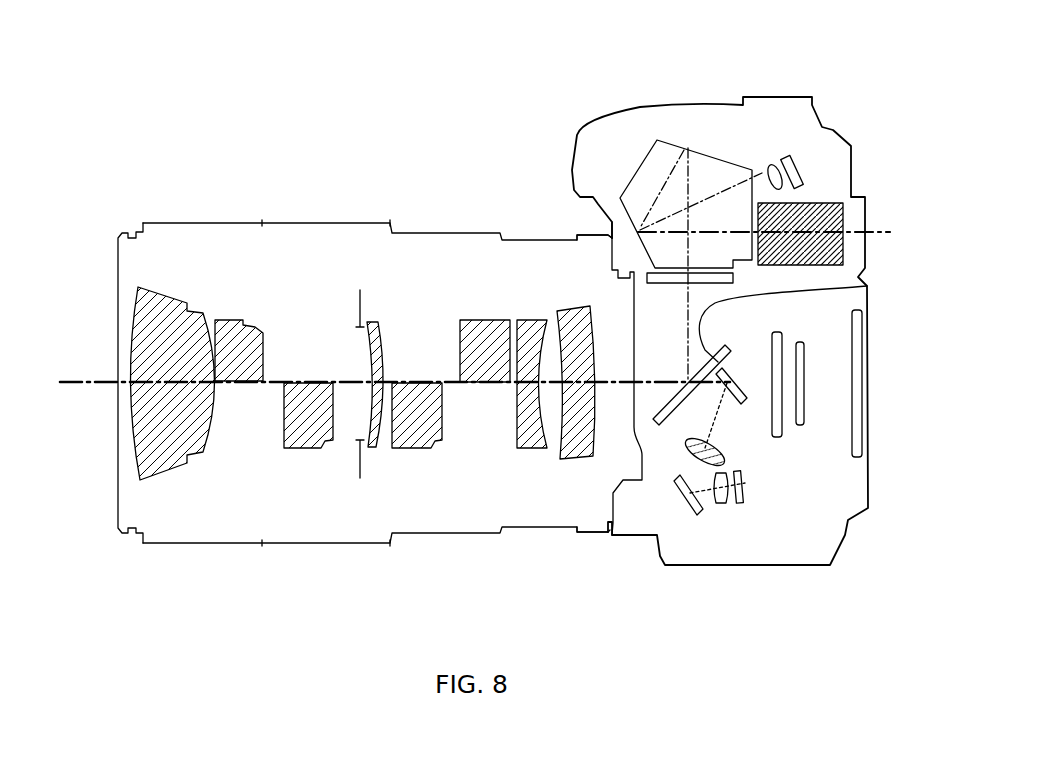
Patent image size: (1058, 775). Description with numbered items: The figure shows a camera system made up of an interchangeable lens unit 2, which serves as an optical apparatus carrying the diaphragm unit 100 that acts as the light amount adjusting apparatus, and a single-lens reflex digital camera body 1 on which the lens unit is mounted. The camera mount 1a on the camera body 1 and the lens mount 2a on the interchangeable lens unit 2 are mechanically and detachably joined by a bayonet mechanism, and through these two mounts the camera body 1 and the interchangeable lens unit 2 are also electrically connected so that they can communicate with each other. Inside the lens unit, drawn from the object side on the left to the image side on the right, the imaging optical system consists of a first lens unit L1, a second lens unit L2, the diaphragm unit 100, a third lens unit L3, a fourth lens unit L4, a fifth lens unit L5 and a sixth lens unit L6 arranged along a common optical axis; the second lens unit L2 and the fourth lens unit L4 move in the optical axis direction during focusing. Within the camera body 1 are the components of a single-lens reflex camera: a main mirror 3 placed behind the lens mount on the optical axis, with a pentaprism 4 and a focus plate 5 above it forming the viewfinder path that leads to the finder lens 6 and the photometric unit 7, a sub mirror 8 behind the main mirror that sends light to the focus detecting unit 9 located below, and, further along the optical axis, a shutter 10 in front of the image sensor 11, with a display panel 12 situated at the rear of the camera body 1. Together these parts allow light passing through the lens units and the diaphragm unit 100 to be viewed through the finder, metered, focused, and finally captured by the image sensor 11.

The camera body 1 is at (774, 97).
The camera mount 1a is at (627, 493).
The interchangeable lens unit 2 is at (178, 544).
The lens mount 2a is at (620, 566).
The main mirror 3 is at (858, 286).
The pentaprism 4 is at (703, 150).
The focus plate 5 is at (668, 284).
The finder lens 6 is at (845, 218).
The photometric unit 7 is at (800, 157).
The sub mirror 8 is at (734, 400).
The focus detecting unit 9 is at (717, 513).
The shutter 10 is at (782, 437).
The image sensor 11 is at (802, 427).
The display panel 12 is at (867, 383).
The diaphragm unit 100 is at (357, 467).
The first lens unit L1 is at (158, 288).
The second lens unit L2 is at (240, 318).
The third lens unit L3 is at (378, 320).
The fourth lens unit L4 is at (477, 316).
The fifth lens unit L5 is at (528, 450).
The sixth lens unit L6 is at (575, 458).